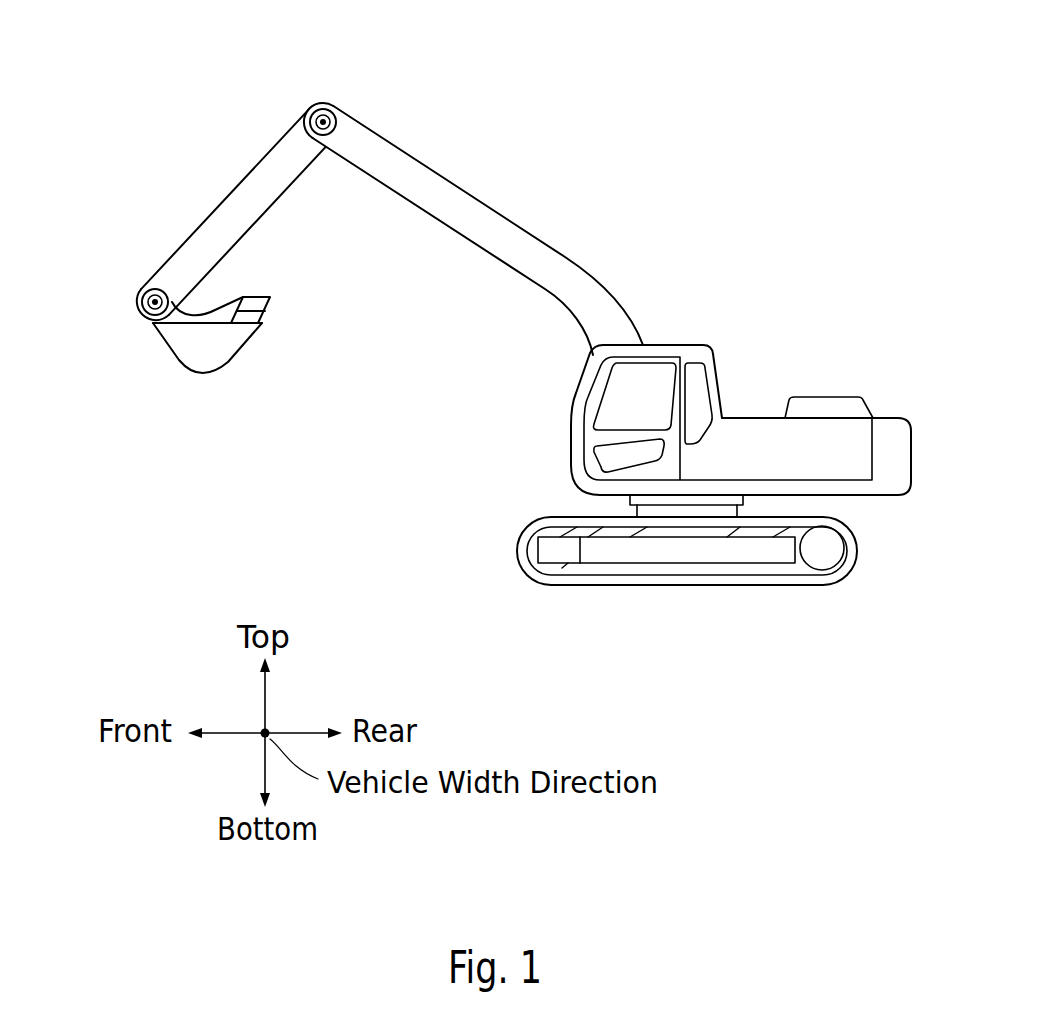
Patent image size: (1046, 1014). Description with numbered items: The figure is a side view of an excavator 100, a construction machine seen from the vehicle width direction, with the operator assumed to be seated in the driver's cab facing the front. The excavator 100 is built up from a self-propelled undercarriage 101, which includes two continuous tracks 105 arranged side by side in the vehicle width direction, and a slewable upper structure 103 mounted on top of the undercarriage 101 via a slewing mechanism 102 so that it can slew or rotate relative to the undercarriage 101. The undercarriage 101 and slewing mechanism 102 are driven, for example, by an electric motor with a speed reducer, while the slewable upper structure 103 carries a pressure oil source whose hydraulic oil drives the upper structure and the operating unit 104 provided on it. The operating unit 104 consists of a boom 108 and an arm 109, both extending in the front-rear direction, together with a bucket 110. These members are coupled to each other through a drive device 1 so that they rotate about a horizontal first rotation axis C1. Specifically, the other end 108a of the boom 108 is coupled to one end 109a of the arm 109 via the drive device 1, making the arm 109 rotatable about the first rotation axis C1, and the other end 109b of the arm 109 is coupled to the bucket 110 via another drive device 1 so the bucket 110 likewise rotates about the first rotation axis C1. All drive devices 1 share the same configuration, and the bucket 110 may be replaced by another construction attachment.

The excavator 100 is at (790, 260).
The undercarriage 101 is at (523, 588).
The slewing mechanism 102 is at (740, 516).
The slewable upper structure 103 is at (892, 418).
The operating unit 104 is at (403, 122).
The continuous tracks 105 is at (760, 586).
The boom 108 is at (478, 198).
The other end of the boom 108a is at (339, 150).
The arm 109 is at (221, 204).
The one end of the arm 109a is at (297, 121).
The other end of the arm 109b is at (154, 289).
The bucket 110 is at (232, 358).
The drive device 1 is at (323, 96).
The first rotation axis C1 is at (332, 118).